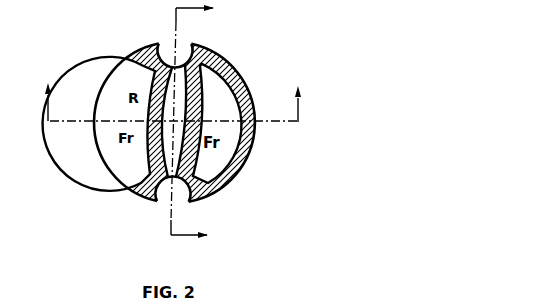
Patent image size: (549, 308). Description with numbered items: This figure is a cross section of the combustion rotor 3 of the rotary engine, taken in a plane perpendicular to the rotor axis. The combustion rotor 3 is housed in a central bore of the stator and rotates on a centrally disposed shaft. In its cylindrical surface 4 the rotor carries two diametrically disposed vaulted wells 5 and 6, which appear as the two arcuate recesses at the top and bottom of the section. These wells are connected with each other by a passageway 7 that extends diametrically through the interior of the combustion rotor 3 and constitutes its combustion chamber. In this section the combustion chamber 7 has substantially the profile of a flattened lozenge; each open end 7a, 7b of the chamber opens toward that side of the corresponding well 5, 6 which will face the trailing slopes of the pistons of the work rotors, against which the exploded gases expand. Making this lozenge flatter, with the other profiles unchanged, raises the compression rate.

The combustion rotor 3 is at (120, 63).
The cylindrical surface 4 is at (174, 99).
The vaulted well 5 is at (172, 188).
The vaulted well 6 is at (174, 46).
The passageway 7 is at (174, 121).
The open end of combustion chamber 7a is at (206, 186).
The open end of combustion chamber 7b is at (212, 60).